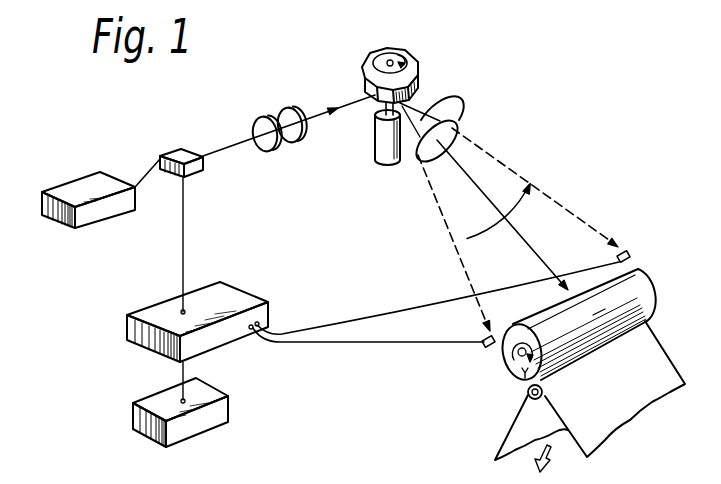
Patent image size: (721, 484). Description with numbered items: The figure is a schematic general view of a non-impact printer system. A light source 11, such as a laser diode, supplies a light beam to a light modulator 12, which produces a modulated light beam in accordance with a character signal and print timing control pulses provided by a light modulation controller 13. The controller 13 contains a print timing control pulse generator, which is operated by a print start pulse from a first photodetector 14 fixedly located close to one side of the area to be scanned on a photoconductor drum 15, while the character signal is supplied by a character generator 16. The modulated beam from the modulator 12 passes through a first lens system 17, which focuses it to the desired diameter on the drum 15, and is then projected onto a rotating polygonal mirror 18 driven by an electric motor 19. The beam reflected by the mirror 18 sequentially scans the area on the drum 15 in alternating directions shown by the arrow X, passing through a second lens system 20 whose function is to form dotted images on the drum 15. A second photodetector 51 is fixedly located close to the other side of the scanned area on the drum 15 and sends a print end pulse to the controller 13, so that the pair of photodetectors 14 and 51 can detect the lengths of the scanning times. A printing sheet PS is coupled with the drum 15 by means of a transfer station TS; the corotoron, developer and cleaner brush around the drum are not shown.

The light source 11 is at (71, 181).
The light modulator 12 is at (183, 149).
The light modulation controller 13 is at (228, 285).
The first photodetector 14 is at (489, 348).
The photoconductor drum 15 is at (643, 294).
The character generator 16 is at (230, 417).
The first lens system 17 is at (285, 109).
The rotating polygonal mirror 18 is at (403, 50).
The electric motor 19 is at (375, 148).
The second lens system 20 is at (453, 118).
The second photodetector 51 is at (631, 252).
The arrow X is at (508, 224).
The printing sheet PS is at (657, 369).
The transfer station TS is at (533, 397).